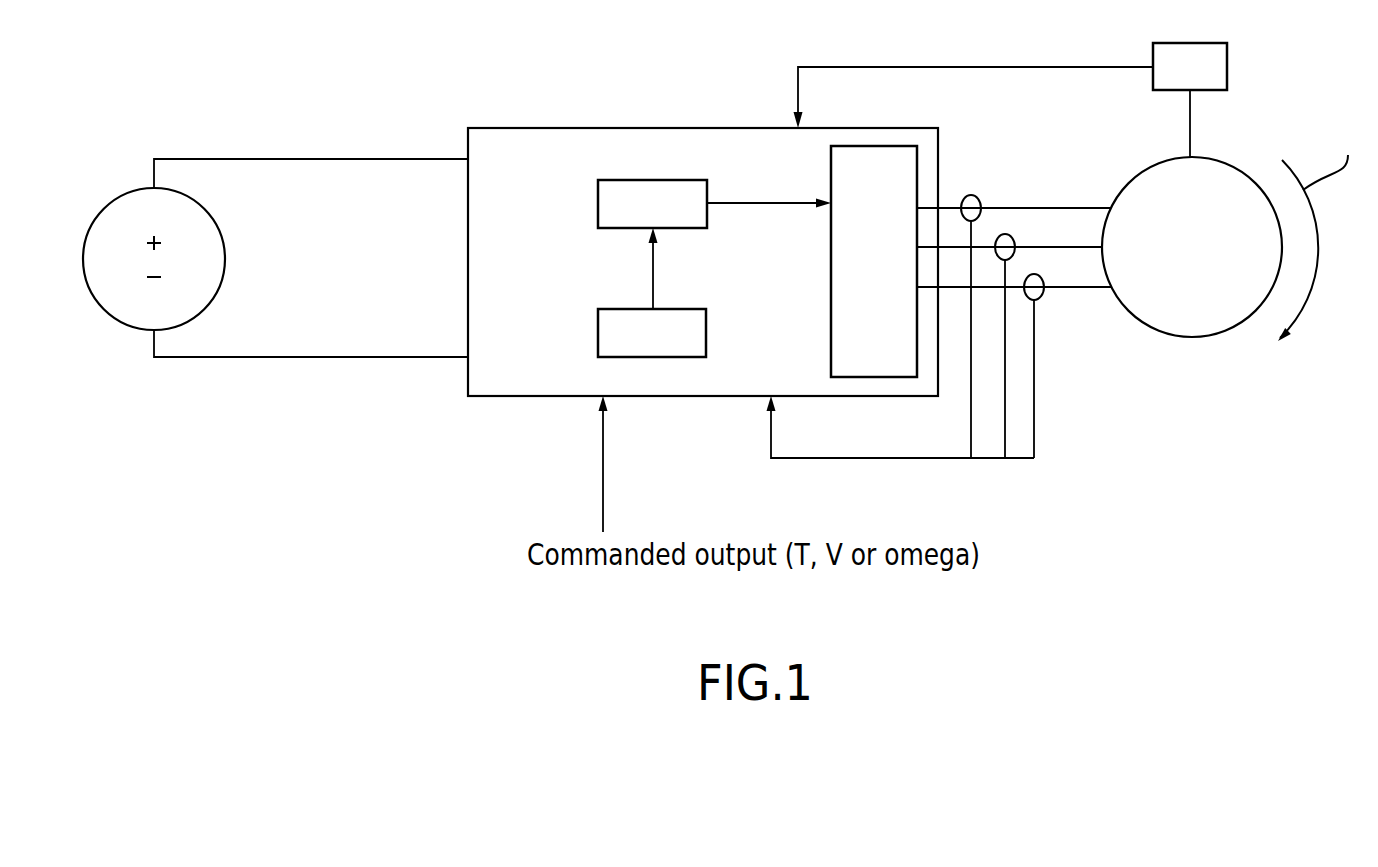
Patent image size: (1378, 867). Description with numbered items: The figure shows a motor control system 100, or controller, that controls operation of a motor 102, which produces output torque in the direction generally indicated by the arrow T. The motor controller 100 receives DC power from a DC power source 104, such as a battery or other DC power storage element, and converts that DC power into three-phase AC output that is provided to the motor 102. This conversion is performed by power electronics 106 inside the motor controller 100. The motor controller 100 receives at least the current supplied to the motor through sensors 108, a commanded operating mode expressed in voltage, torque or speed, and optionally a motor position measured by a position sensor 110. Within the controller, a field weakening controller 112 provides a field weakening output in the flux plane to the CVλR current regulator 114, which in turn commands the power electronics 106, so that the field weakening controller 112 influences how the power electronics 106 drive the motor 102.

The motor control system 100 is at (615, 128).
The motor 102 is at (1212, 278).
The DC power source 104 is at (108, 203).
The power electronics 106 is at (897, 276).
The sensors 108 is at (1092, 435).
The position sensor 110 is at (1212, 79).
The field weakening controller 112 is at (673, 346).
The CVλR current regulator 114 is at (673, 217).